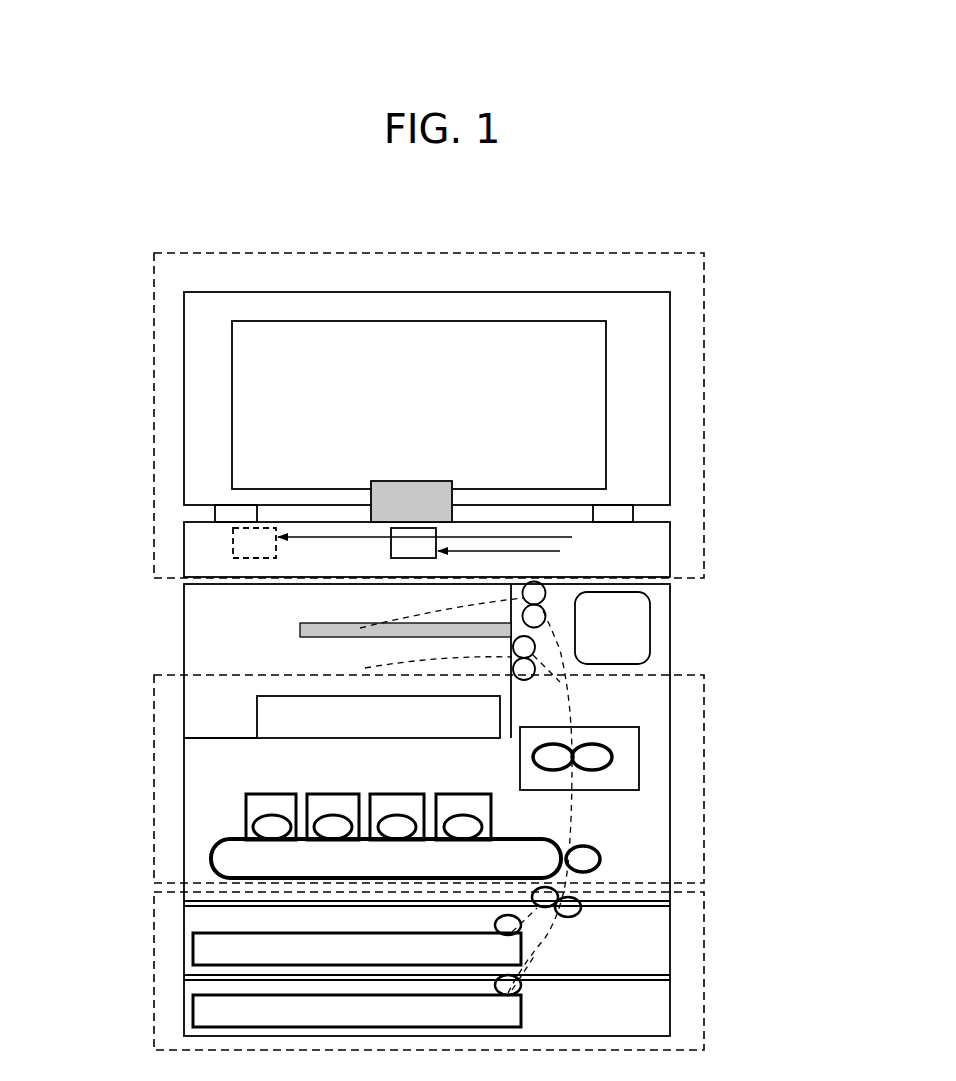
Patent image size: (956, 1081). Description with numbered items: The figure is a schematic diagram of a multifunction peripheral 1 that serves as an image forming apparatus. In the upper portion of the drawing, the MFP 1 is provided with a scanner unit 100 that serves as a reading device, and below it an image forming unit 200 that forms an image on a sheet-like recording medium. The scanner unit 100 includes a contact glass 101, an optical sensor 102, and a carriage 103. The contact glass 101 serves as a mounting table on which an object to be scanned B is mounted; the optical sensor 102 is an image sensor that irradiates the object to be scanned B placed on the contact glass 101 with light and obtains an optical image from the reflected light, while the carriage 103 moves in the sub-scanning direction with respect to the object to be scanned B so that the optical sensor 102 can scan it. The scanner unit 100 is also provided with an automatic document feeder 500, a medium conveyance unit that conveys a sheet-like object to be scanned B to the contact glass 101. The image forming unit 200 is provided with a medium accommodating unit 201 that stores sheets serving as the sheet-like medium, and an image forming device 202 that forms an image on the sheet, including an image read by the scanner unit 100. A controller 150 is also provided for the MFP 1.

The multifunction peripheral 1 is at (745, 254).
The scanner unit 100 is at (151, 363).
The contact glass 101 is at (664, 519).
The optical sensor 102 is at (411, 546).
The carriage 103 is at (390, 543).
The controller 150 is at (594, 641).
The image forming unit 200 is at (184, 641).
The medium accommodating unit 201 is at (705, 965).
The image forming device 202 is at (705, 792).
The automatic document feeder 500 is at (533, 284).
The object to be scanned B is at (453, 481).